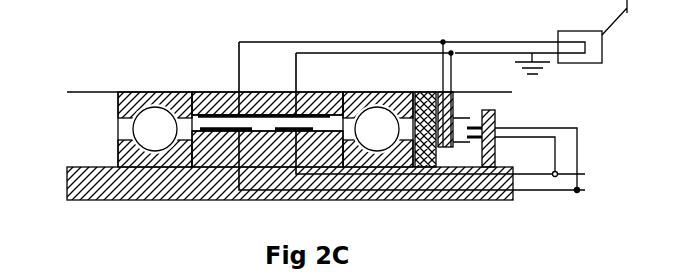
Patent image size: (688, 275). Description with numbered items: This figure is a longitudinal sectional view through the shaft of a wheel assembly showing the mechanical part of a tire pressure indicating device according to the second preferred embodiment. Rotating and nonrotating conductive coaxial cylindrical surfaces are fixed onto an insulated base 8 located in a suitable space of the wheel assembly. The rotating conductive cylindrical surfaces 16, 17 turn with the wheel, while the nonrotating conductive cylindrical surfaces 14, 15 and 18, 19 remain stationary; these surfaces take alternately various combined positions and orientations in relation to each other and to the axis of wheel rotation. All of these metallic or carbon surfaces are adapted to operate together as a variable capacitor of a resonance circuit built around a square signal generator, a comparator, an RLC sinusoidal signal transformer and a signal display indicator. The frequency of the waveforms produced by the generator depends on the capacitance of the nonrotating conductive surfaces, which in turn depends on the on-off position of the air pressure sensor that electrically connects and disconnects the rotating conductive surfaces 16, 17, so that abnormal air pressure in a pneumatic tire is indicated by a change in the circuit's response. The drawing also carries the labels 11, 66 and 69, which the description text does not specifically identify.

The insulated base 8 is at (275, 103).
The signal processing circuit 11 is at (523, 30).
The nonrotating conductive cylindrical surface 14 is at (467, 128).
The nonrotating conductive cylindrical surface 15 is at (470, 137).
The rotating conductive cylindrical surface 16 is at (310, 128).
The rotating conductive cylindrical surface 17 is at (223, 128).
The nonrotating conductive cylindrical surface 18 is at (344, 92).
The nonrotating conductive cylindrical surface 19 is at (220, 110).
The ball bearings 66 is at (373, 143).
The base housing 69 is at (112, 195).